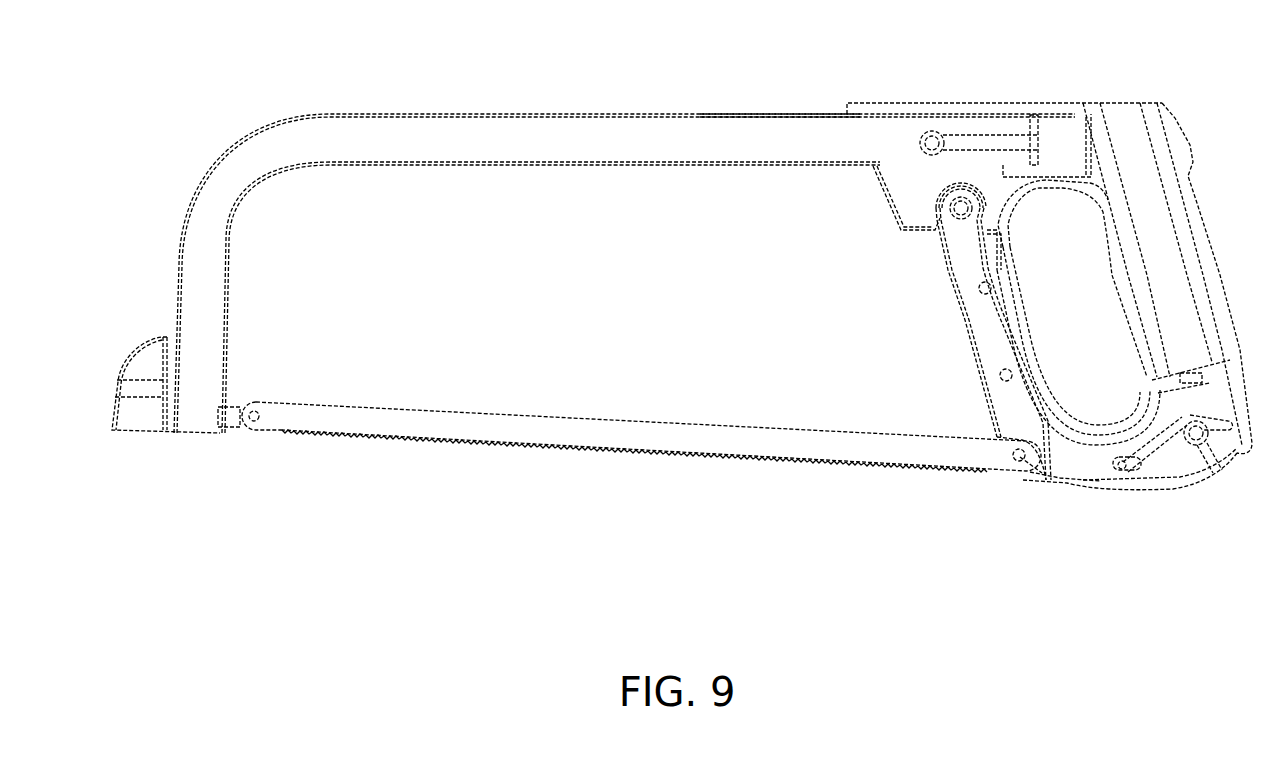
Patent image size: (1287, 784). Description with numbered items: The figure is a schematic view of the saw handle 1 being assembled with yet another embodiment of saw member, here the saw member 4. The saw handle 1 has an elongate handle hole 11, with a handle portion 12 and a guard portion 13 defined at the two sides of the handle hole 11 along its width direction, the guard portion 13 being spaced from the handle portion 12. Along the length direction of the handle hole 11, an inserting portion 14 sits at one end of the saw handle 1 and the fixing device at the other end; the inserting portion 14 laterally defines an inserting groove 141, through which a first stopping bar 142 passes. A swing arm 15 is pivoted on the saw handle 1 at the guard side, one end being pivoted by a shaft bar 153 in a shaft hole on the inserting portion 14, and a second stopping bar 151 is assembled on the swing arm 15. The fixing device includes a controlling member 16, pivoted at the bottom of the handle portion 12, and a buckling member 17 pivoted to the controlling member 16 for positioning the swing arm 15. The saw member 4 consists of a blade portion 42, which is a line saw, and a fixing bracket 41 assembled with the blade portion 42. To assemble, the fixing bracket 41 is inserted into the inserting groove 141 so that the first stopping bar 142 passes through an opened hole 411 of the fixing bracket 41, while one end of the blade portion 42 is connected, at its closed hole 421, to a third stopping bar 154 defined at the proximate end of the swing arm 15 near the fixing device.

The saw handle 1 is at (1184, 118).
The saw member 4 is at (678, 113).
The fixing bracket 41 is at (807, 128).
The opened hole 411 is at (1005, 140).
The blade portion 42 is at (745, 427).
The closed hole 421 is at (1065, 480).
The handle hole 11 is at (1056, 196).
The handle portion 12 is at (1212, 240).
The guard portion 13 is at (1012, 258).
The inserting portion 14 is at (857, 112).
The inserting groove 141 is at (996, 180).
The first stopping bar 142 is at (930, 128).
The swing arm 15 is at (975, 402).
The second stopping bar 151 is at (992, 289).
The shaft bar 153 is at (957, 213).
The third stopping bar 154 is at (1019, 462).
The controlling member 16 is at (1183, 475).
The buckling member 17 is at (1147, 450).